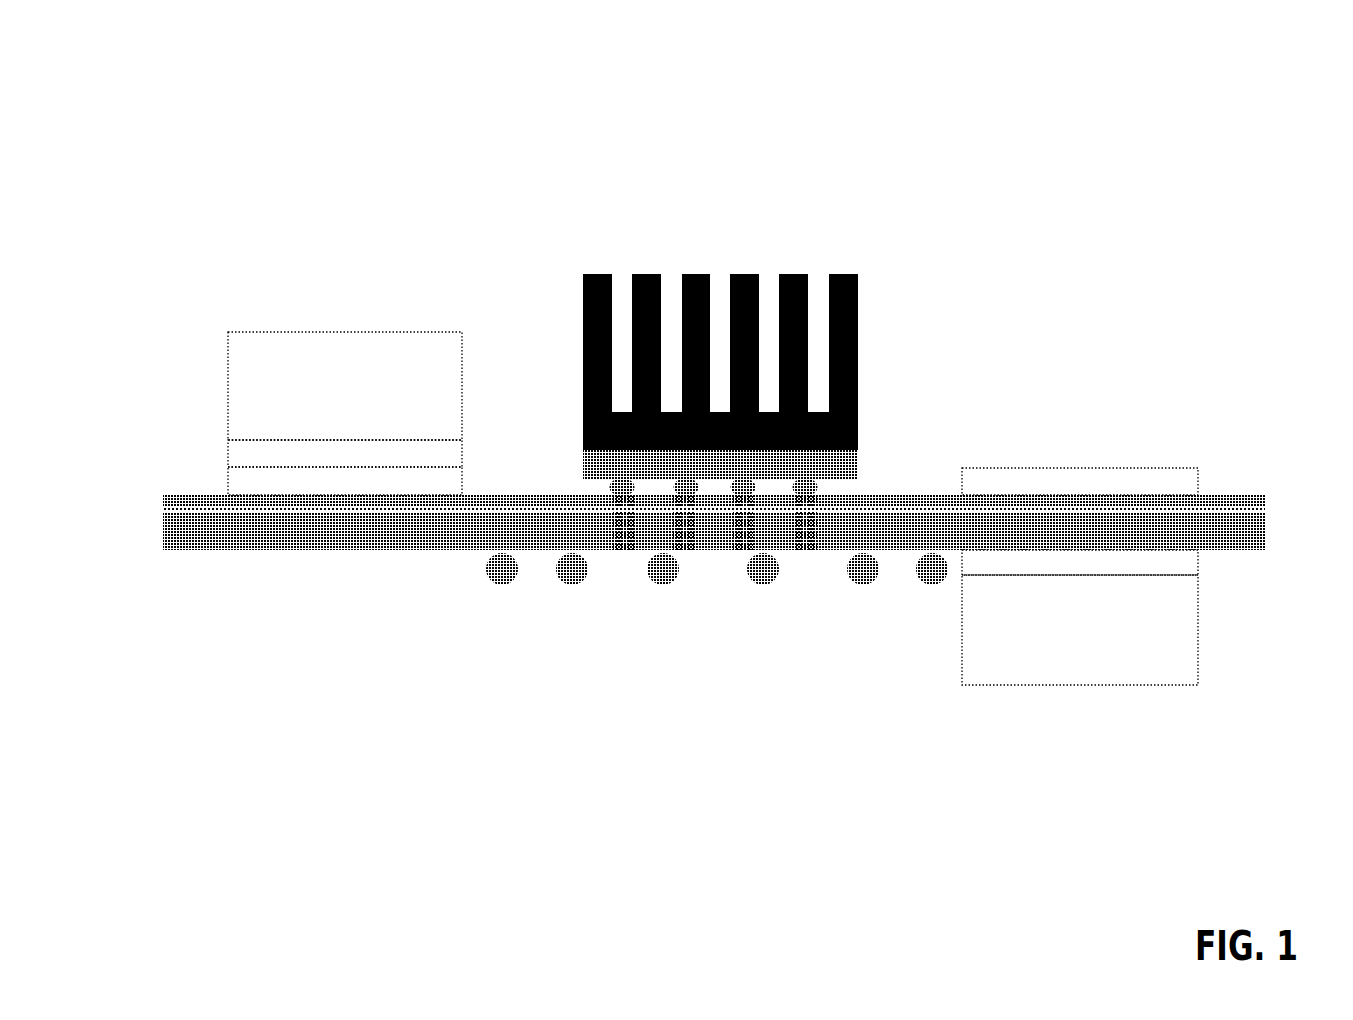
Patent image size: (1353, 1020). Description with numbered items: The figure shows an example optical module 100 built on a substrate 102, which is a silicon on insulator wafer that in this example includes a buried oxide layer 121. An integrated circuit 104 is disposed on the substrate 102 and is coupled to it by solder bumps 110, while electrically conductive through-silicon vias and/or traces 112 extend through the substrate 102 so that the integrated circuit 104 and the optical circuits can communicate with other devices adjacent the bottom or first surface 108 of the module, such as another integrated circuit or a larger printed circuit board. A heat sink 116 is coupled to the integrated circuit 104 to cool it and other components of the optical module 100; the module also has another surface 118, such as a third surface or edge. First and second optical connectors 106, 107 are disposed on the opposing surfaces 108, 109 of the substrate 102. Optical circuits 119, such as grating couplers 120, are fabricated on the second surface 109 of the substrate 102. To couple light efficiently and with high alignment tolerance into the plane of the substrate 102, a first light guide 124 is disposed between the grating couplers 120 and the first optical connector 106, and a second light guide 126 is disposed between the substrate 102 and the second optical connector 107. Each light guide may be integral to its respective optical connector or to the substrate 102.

The optical module 100 is at (1102, 96).
The substrate 102 is at (168, 530).
The integrated circuit 104 is at (858, 450).
The first optical connector 106 is at (453, 352).
The second optical connector 107 is at (1190, 673).
The first surface 108 is at (281, 560).
The second surface 109 is at (916, 491).
The solder bumps 110 is at (617, 478).
The traces 112 is at (747, 547).
The heat sink 116 is at (583, 274).
The another surface 118 is at (1325, 536).
The optical circuits 119 is at (336, 513).
The grating couplers 120 is at (228, 483).
The buried oxide layer 121 is at (206, 516).
The first light guide 124 is at (457, 455).
The second light guide 126 is at (1190, 563).